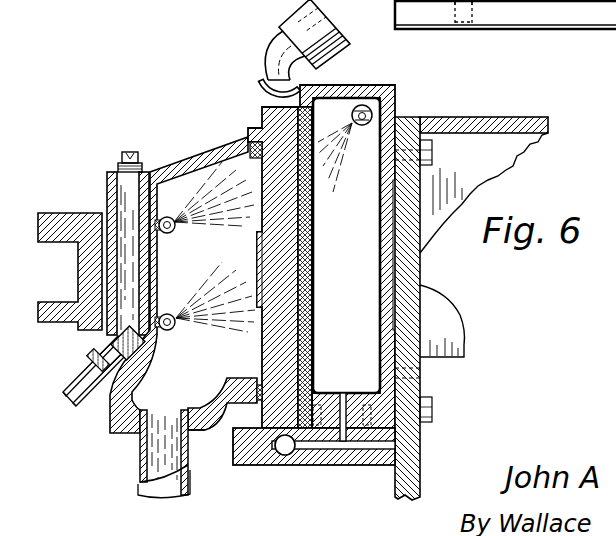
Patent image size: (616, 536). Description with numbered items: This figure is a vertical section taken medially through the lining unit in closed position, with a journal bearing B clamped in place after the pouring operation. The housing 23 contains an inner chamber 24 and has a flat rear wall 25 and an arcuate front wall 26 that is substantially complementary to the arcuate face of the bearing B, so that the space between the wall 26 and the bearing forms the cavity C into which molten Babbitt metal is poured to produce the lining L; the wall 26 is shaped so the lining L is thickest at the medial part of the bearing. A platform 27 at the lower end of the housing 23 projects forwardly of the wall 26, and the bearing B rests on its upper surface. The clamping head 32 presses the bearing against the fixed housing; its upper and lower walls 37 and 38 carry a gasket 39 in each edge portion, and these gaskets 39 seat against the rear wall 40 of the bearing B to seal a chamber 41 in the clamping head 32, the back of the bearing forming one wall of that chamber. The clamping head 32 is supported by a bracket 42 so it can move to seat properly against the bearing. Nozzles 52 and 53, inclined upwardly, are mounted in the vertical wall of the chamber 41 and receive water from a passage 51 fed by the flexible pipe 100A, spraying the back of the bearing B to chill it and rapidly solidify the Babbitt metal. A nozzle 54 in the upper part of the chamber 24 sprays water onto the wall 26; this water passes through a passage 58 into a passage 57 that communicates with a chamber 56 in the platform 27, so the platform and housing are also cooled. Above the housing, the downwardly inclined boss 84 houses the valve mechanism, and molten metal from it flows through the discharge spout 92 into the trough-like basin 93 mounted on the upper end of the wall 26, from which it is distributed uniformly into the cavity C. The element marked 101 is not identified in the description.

The housing 23 is at (365, 87).
The inner chamber 24 is at (356, 313).
The flat rear wall 25 is at (402, 263).
The arcuate front wall 26 is at (307, 268).
The platform 27 is at (248, 455).
The clamping head 32 is at (147, 317).
The upper wall 37 is at (202, 152).
The lower wall 38 is at (225, 435).
The gasket 39 is at (252, 143).
The rear wall of bearing 40 is at (257, 232).
The chamber 41 is at (190, 379).
The bracket 42 is at (40, 215).
The passage 51 is at (127, 197).
The nozzle 52 is at (172, 233).
The nozzle 53 is at (174, 330).
The nozzle 54 is at (373, 115).
The chamber 56 is at (285, 455).
The passage 57 is at (352, 448).
The passage 58 is at (342, 393).
The boss 84 is at (322, 16).
The discharge spout 92 is at (282, 42).
The trough-like basin 93 is at (257, 71).
The flexible pipe 100A is at (88, 410).
The drain tube 101 is at (152, 495).
The bearing B is at (262, 245).
The cavity C is at (298, 232).
The lining L is at (302, 265).